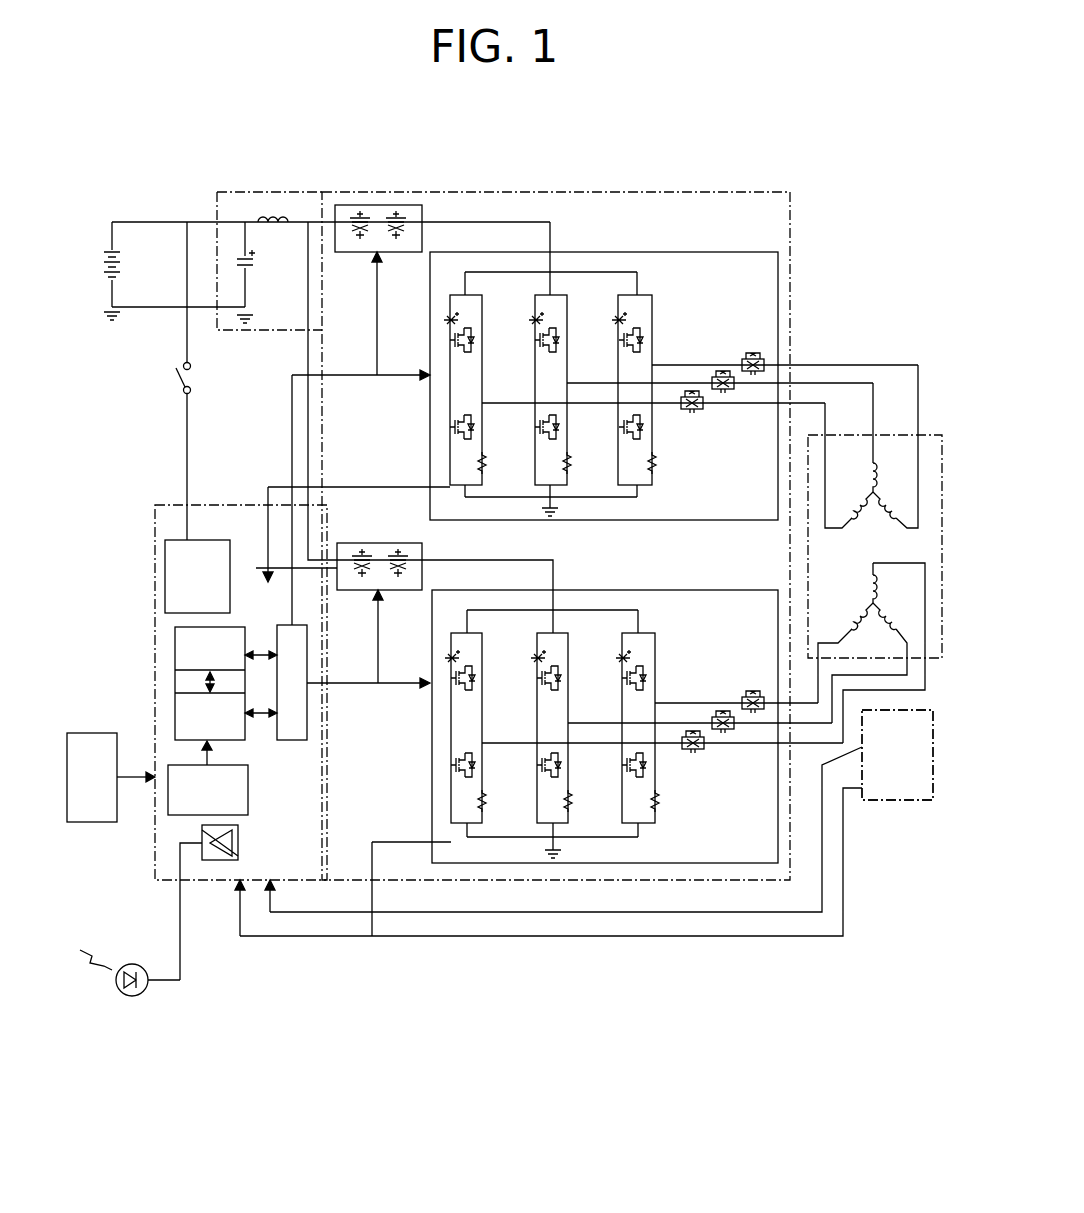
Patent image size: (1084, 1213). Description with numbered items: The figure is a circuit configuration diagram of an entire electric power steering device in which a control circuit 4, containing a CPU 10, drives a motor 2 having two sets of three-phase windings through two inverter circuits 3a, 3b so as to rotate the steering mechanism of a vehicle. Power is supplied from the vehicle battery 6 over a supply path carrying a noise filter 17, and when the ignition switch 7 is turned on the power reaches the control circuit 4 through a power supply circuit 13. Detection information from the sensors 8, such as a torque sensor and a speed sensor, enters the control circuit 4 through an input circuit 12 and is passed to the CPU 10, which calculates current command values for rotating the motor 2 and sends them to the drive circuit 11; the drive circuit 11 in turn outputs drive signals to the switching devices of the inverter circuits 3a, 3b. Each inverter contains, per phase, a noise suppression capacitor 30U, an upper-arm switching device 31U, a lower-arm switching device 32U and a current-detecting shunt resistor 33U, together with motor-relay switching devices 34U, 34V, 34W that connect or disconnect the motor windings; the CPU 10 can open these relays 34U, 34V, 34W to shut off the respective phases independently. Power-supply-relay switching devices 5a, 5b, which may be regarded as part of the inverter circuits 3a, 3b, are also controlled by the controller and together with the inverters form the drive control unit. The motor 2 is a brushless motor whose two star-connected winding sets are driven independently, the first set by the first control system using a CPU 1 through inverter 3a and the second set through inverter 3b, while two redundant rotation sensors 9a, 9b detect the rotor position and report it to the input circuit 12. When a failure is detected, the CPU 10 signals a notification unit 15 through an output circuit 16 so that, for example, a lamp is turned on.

The CPU 1 is at (617, 192).
The motor 2 is at (899, 433).
The inverter circuit 3a is at (650, 370).
The inverter circuit 3b is at (728, 590).
The control circuit 4 is at (153, 590).
The power-supply-relay switching device 5a is at (345, 254).
The power-supply-relay switching device 5b is at (398, 592).
The battery 6 is at (110, 245).
The ignition switch 7 is at (166, 383).
The sensors 8 is at (85, 822).
The rotation sensor 9a is at (885, 806).
The rotation sensor 9b is at (881, 870).
The CPU 10 is at (236, 627).
The drive circuit 11 is at (286, 741).
The input circuit 12 is at (226, 763).
The power supply circuit 13 is at (200, 540).
The notification unit 15 is at (124, 996).
The output circuit 16 is at (240, 838).
The noise filter 17 is at (268, 192).
The noise suppression capacitor 30U is at (444, 317).
The upper-arm switching device 31U is at (456, 389).
The lower-arm switching device 32U is at (486, 442).
The shunt resistor 33U is at (484, 472).
The motor-relay switching device 34U is at (693, 413).
The motor-relay switching device 34V is at (720, 372).
The motor-relay switching device 34W is at (753, 392).